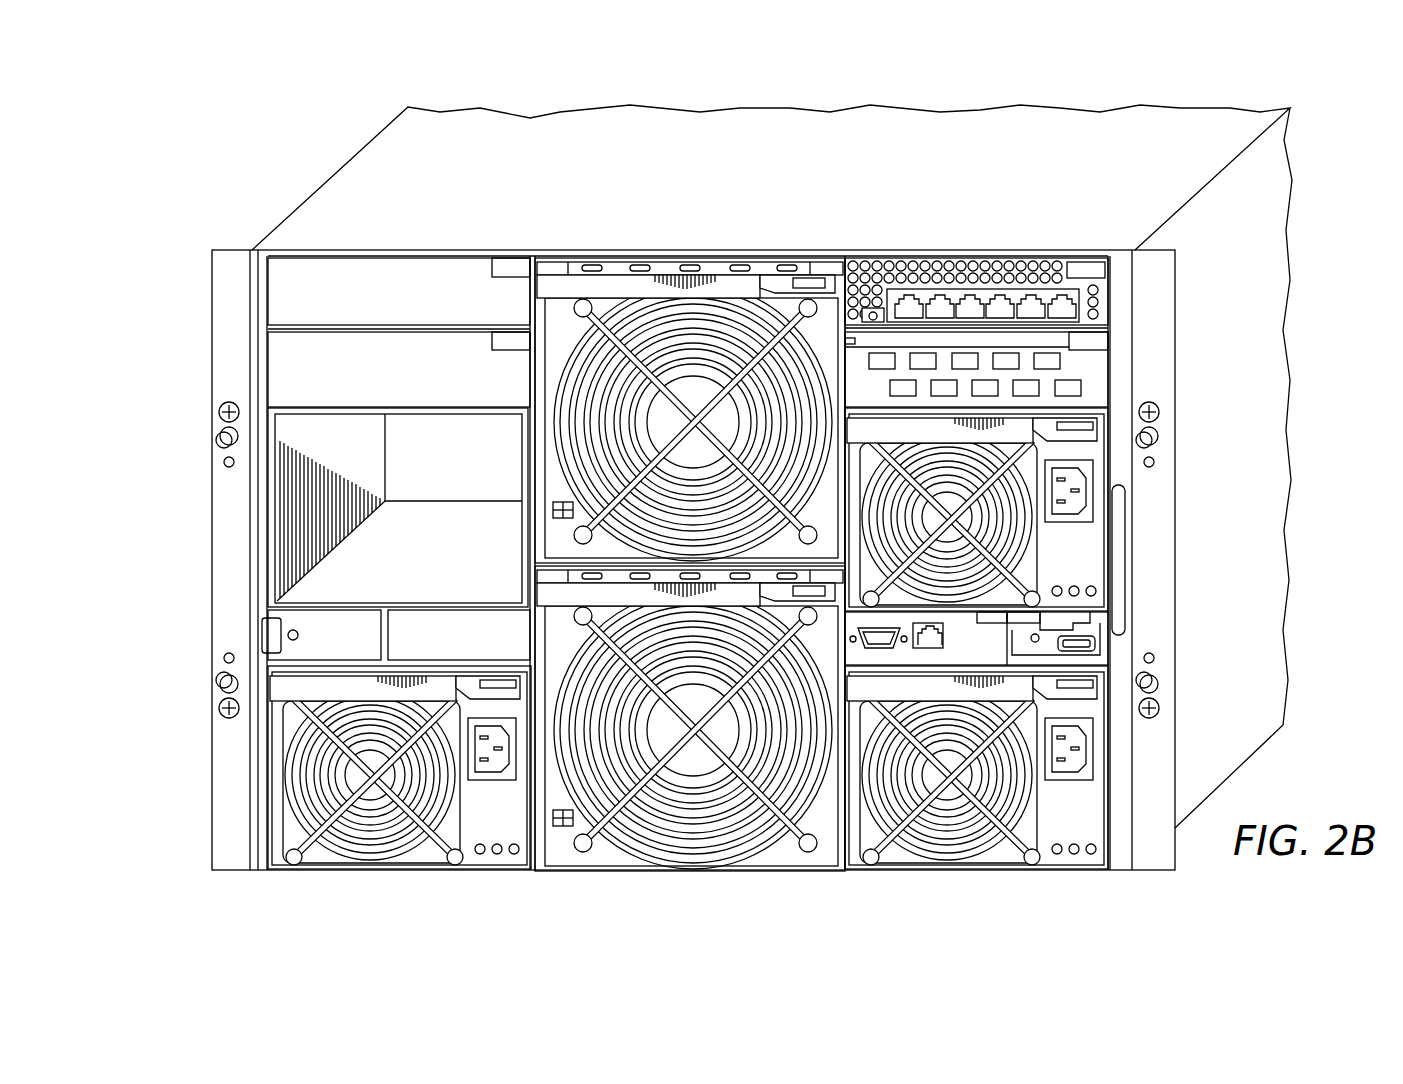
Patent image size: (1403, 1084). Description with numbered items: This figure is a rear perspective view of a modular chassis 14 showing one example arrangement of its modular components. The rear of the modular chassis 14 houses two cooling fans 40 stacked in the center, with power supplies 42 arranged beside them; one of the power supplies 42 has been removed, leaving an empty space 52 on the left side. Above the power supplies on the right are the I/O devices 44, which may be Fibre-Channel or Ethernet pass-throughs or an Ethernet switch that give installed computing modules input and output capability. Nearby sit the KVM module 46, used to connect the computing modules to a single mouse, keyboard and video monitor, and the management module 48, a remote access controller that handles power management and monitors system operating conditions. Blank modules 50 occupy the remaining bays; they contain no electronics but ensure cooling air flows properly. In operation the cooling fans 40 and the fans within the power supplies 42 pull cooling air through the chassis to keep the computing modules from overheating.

The modular chassis 14 is at (851, 177).
The cooling fans 40 is at (667, 266).
The power supplies 42 is at (426, 874).
The I/O devices 44 is at (987, 274).
The KVM module 46 is at (1093, 622).
The management module 48 is at (984, 654).
The blank module 50 is at (414, 304).
The empty space 52 is at (442, 564).